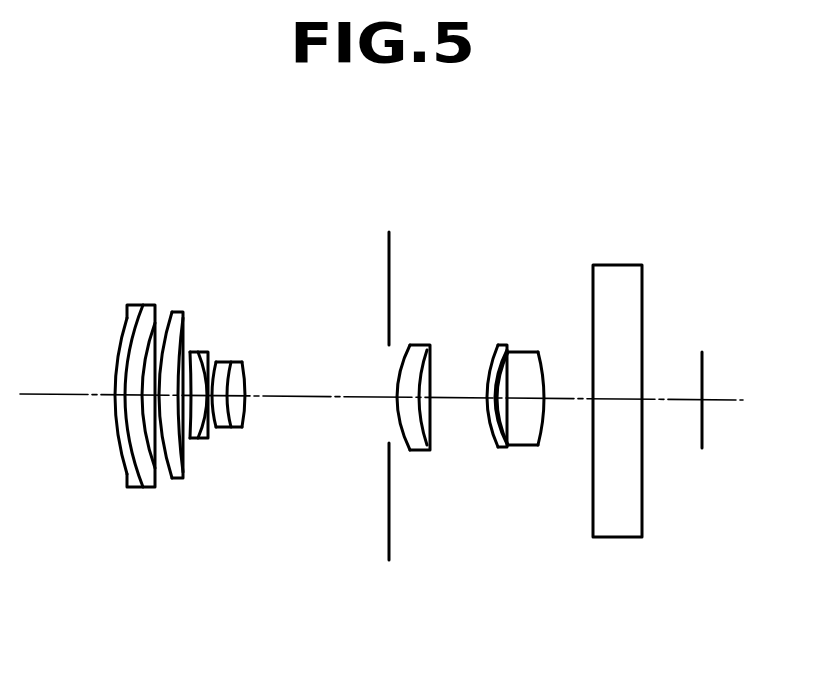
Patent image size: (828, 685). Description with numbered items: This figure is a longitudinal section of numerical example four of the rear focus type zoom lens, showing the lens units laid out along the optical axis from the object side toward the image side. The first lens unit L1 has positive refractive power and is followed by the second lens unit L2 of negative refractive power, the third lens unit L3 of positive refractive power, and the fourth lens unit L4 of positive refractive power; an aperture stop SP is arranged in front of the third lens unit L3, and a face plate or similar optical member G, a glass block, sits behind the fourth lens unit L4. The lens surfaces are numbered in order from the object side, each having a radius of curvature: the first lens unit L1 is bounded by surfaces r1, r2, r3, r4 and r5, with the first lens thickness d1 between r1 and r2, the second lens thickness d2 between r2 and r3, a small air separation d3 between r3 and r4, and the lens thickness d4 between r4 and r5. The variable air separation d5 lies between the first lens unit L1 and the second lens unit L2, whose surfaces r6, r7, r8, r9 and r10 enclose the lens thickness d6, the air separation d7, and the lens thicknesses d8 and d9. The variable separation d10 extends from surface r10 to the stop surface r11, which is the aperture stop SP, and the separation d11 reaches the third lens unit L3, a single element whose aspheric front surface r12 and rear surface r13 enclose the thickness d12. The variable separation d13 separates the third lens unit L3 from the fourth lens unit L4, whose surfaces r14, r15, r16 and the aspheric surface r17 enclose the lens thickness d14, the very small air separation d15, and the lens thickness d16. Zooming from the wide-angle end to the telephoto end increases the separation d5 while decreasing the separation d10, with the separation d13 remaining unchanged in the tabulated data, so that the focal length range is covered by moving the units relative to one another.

The first lens unit L1 is at (180, 143).
The second lens unit L2 is at (203, 177).
The third lens unit L3 is at (470, 213).
The fourth lens unit L4 is at (487, 180).
The aperture stop SP is at (387, 290).
The face plate G is at (625, 263).
The first lens surface r1 is at (122, 347).
The second lens surface r2 is at (131, 334).
The third lens surface r3 is at (153, 332).
The fourth lens surface r4 is at (171, 323).
The fifth lens surface r5 is at (183, 332).
The sixth lens surface r6 is at (192, 356).
The seventh lens surface r7 is at (203, 356).
The eighth lens surface r8 is at (222, 362).
The ninth lens surface r9 is at (240, 368).
The tenth lens surface r10 is at (255, 376).
The stop surface r11 is at (361, 371).
The twelfth lens surface r12 is at (409, 364).
The thirteenth lens surface r13 is at (427, 366).
The fourteenth lens surface r14 is at (486, 371).
The fifteenth lens surface r15 is at (500, 366).
The sixteenth lens surface r16 is at (540, 366).
The seventeenth lens surface r17 is at (554, 372).
The first lens thickness d1 is at (122, 420).
The second lens thickness d2 is at (142, 422).
The third air separation d3 is at (158, 424).
The fourth lens thickness d4 is at (176, 424).
The fifth air separation d5 is at (188, 424).
The sixth lens thickness d6 is at (197, 420).
The seventh air separation d7 is at (211, 422).
The eighth lens thickness d8 is at (223, 420).
The ninth lens thickness d9 is at (240, 422).
The tenth air separation d10 is at (318, 405).
The eleventh air separation d11 is at (395, 422).
The twelfth lens thickness d12 is at (416, 428).
The thirteenth air separation d13 is at (445, 424).
The fourteenth lens thickness d14 is at (502, 432).
The fifteenth air separation d15 is at (513, 432).
The sixteenth lens thickness d16 is at (542, 425).